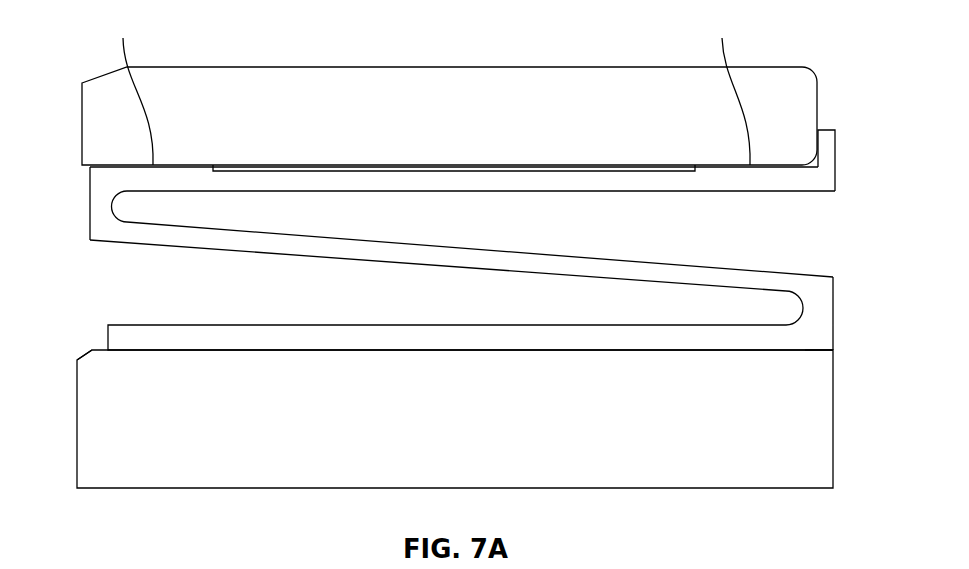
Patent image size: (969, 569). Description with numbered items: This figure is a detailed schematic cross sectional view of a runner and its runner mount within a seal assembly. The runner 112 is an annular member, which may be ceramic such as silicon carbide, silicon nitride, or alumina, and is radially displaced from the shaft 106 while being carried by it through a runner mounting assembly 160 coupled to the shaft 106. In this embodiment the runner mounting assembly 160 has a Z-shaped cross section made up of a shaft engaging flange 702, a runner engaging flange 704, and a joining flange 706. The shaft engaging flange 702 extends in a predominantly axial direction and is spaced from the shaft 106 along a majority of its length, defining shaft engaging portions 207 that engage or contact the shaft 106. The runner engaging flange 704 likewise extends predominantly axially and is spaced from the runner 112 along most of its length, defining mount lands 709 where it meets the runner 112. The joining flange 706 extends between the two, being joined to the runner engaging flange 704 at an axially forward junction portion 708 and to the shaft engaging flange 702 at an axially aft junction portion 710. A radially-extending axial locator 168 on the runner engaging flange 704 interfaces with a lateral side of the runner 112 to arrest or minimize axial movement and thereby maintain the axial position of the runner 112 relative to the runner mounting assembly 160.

The shaft 106 is at (772, 488).
The runner 112 is at (472, 126).
The runner mounting assembly 160 is at (472, 240).
The axial locator 168 is at (830, 153).
The shaft engaging portion 207 is at (128, 350).
The shaft engaging flange 702 is at (537, 332).
The runner engaging flange 704 is at (352, 183).
The joining flange 706 is at (647, 270).
The axially forward junction portion 708 is at (97, 201).
The mount land 709 is at (426, 87).
The axially aft junction portion 710 is at (823, 315).